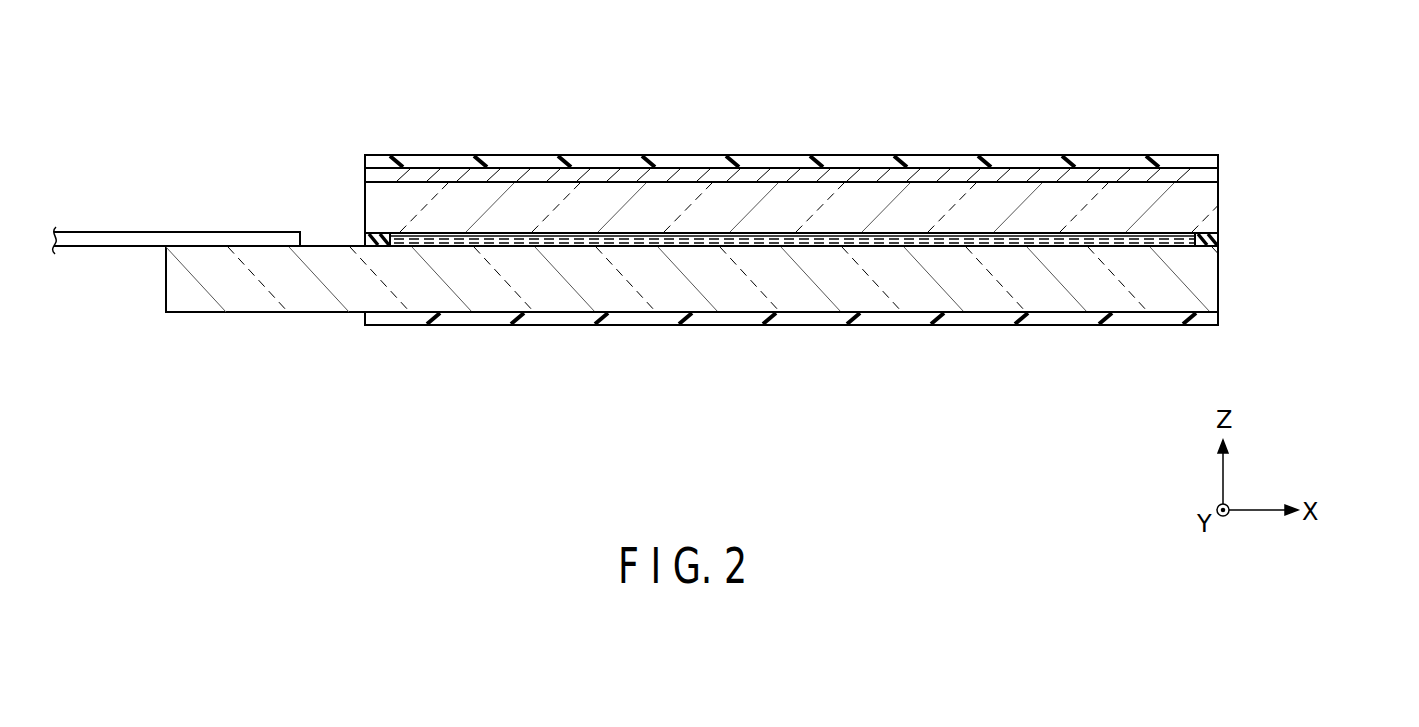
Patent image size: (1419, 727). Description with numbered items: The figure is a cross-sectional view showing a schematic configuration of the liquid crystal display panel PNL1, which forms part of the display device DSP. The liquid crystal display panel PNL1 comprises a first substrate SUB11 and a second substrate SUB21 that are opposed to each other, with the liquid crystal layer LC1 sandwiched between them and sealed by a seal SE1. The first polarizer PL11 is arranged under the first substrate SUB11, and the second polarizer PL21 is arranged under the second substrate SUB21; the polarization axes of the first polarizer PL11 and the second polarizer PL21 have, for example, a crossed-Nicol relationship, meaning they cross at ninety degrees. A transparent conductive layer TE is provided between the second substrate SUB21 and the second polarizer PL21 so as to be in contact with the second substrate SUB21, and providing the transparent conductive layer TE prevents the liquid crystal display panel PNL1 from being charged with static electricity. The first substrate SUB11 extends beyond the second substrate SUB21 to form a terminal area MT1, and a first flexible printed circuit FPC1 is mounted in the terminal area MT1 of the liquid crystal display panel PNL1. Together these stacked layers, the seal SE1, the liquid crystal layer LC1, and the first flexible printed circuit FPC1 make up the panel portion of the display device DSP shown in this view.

The display device DSP is at (1181, 104).
The first flexible printed circuit FPC1 is at (100, 240).
The mounting portion MT1 is at (332, 246).
The liquid crystal display panel PNL1 is at (1350, 143).
The second polarizer PL21 is at (1208, 162).
The transparent conductive layer TE is at (769, 170).
The second substrate SUB21 is at (1208, 210).
The seal SE1 is at (1216, 240).
The liquid crystal layer LC1 is at (927, 243).
The first substrate SUB11 is at (1208, 282).
The first polarizer PL11 is at (1208, 320).